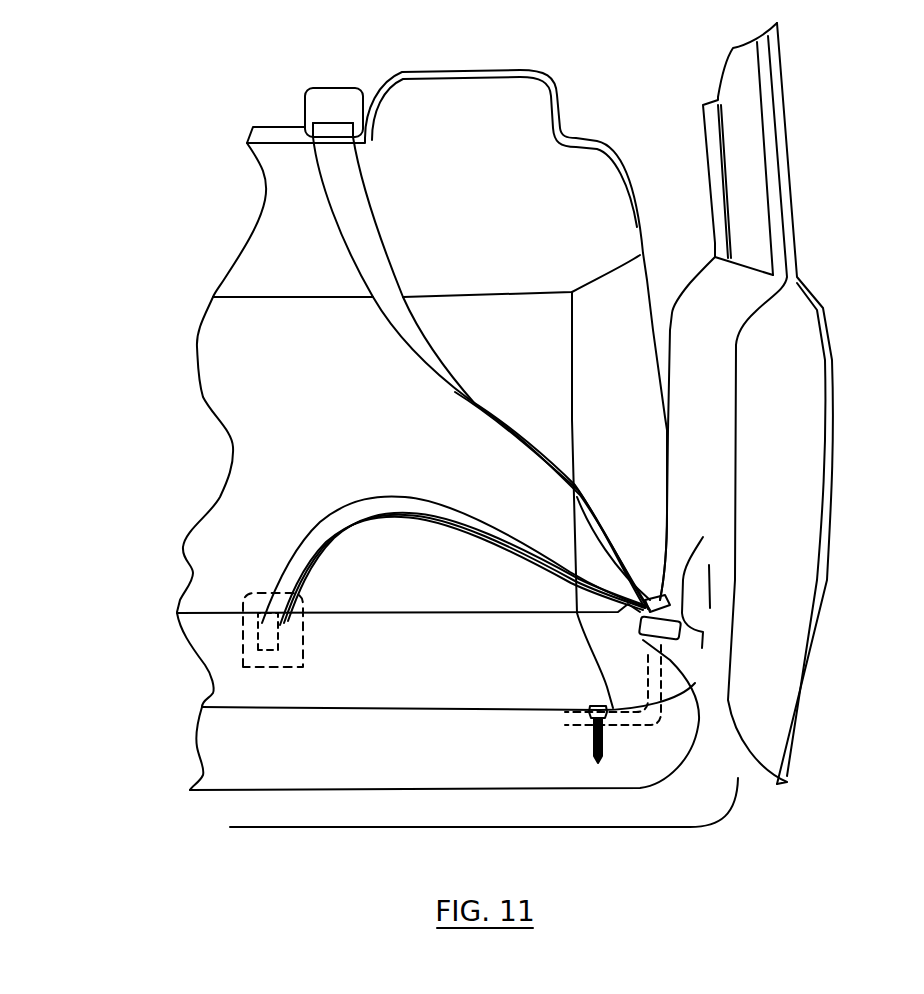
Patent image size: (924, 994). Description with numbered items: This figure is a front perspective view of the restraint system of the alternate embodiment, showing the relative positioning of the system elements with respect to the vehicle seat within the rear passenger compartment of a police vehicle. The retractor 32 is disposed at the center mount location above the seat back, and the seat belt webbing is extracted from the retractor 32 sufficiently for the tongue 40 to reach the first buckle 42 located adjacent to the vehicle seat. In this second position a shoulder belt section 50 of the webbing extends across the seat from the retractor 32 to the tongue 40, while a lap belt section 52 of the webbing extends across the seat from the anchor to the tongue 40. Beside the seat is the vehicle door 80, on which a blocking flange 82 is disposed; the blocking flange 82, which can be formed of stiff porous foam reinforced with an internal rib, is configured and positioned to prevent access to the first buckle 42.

The retractor 32 is at (337, 103).
The shoulder belt section 50 is at (430, 352).
The lap belt section 52 is at (410, 510).
The tongue 40 is at (634, 615).
The first buckle 42 is at (636, 733).
The blocking flange 82 is at (660, 567).
The vehicle door 80 is at (790, 613).